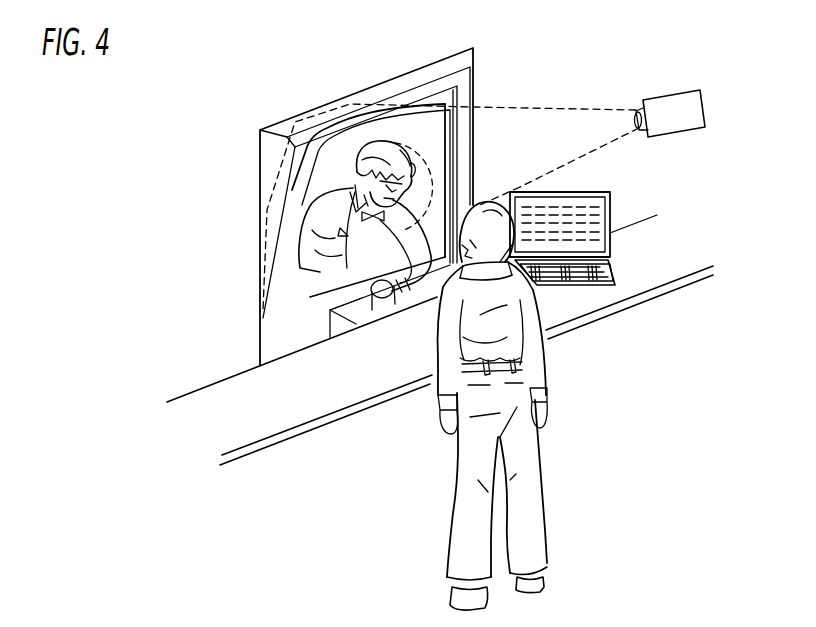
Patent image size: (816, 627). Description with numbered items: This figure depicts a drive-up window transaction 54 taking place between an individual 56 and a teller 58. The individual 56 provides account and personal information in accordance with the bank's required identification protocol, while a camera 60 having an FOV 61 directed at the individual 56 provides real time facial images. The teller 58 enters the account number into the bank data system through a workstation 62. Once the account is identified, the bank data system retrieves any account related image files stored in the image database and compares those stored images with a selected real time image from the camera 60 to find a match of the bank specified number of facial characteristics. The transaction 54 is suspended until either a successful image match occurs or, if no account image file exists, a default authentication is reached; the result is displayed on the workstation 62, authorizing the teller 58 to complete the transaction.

The drive-up window transaction 54 is at (165, 171).
The individual 56 is at (385, 140).
The teller 58 is at (546, 389).
The camera 60 is at (670, 100).
The FOV 61 is at (422, 147).
The workstation 62 is at (622, 213).